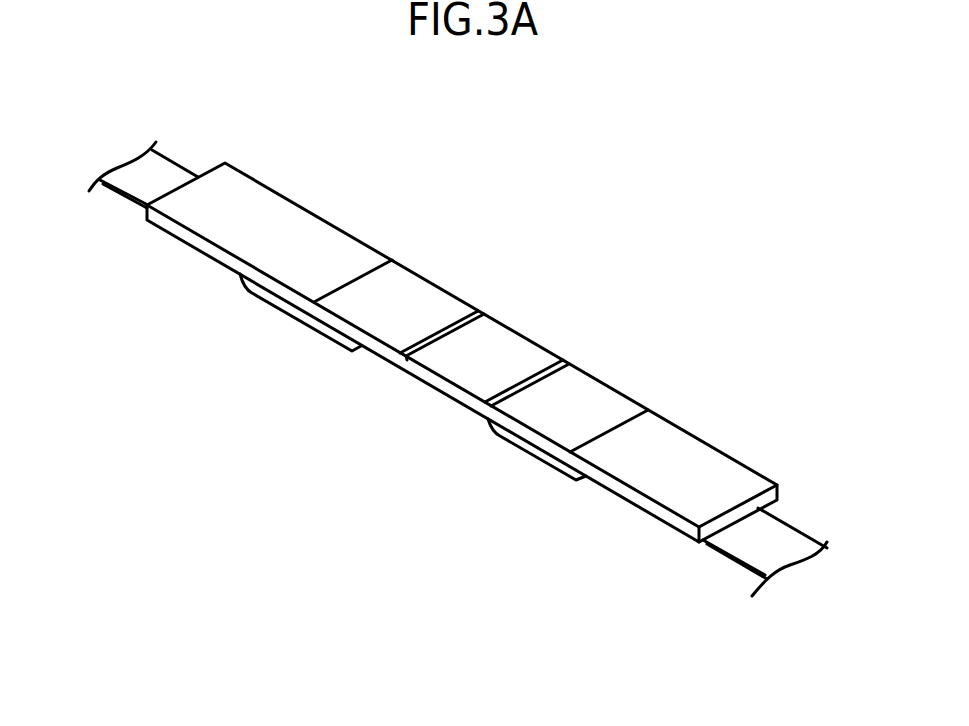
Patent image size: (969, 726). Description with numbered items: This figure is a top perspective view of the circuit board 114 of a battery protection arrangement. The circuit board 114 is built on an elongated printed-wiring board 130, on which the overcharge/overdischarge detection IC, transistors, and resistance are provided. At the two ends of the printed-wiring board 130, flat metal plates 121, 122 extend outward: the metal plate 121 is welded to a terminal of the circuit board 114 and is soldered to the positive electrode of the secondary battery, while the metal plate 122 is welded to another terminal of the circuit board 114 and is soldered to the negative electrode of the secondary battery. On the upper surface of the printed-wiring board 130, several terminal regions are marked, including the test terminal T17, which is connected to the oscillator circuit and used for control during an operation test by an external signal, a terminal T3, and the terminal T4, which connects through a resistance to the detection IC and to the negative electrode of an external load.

The circuit board 114 is at (667, 169).
The metal plate 121 is at (135, 183).
The metal plate 122 is at (778, 541).
The printed-wiring board 130 is at (462, 352).
The test terminal T17 is at (431, 301).
The terminal portion T3 is at (517, 347).
The terminal T4 is at (597, 395).